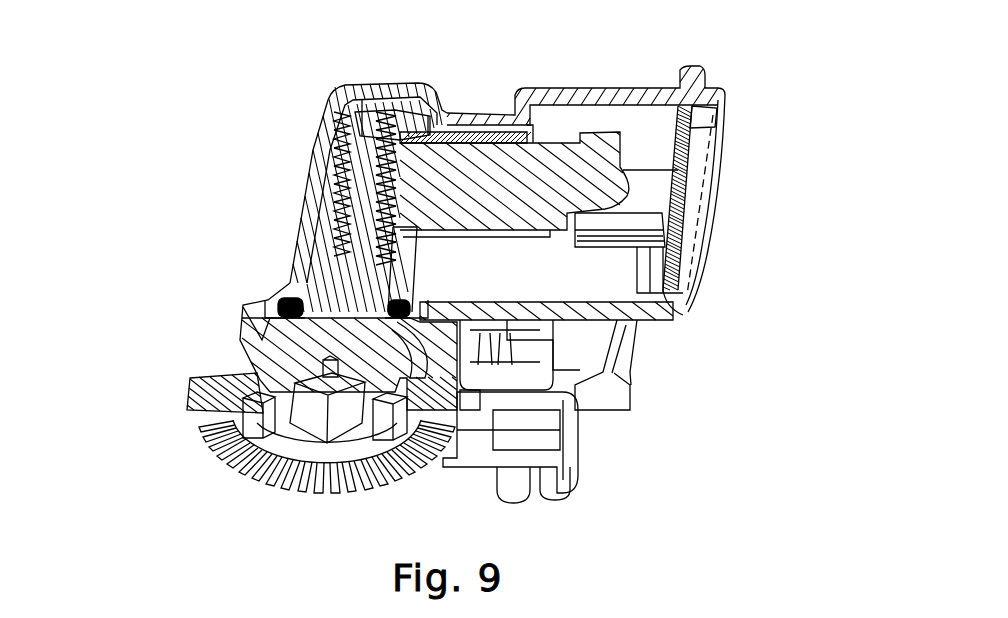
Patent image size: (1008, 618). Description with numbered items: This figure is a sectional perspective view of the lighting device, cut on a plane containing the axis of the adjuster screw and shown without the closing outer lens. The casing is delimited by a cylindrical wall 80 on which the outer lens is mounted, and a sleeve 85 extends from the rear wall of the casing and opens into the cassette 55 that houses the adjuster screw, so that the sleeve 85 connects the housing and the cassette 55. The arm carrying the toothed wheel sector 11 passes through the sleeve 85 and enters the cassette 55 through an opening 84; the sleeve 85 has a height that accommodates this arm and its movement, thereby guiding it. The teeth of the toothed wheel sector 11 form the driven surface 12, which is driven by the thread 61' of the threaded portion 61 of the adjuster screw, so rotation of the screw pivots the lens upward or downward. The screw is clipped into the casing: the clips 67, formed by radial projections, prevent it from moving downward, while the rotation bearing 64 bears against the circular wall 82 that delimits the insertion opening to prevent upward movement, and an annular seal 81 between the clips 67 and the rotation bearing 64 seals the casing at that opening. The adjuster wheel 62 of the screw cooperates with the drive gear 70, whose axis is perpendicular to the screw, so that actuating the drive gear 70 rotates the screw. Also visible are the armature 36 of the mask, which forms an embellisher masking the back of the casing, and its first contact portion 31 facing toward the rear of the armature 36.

The toothed wheel sector 11 is at (553, 160).
The driven surface 12 is at (315, 158).
The first contact portion 31 is at (647, 203).
The armature 36 is at (690, 142).
The cassette 55 is at (348, 97).
The threaded portion 61 is at (288, 206).
The thread 61' is at (262, 183).
The adjuster wheel 62 is at (233, 453).
The rotation bearing 64 is at (263, 330).
The clips 67 is at (293, 277).
The drive gear 70 is at (533, 440).
The cylindrical wall 80 is at (636, 95).
The annular seal 81 is at (417, 300).
The circular wall 82 is at (267, 302).
The opening 84 is at (440, 249).
The sleeve 85 is at (478, 115).